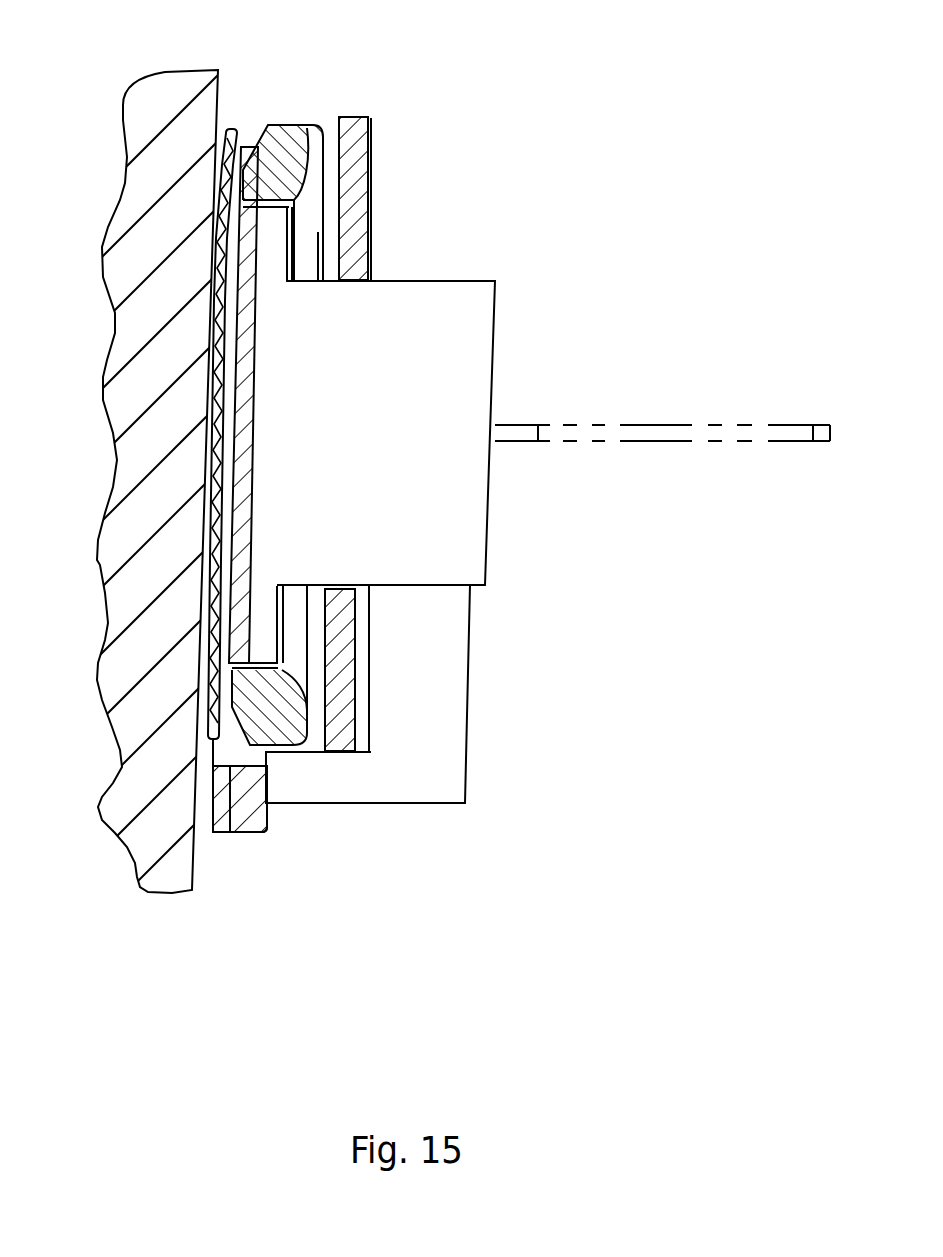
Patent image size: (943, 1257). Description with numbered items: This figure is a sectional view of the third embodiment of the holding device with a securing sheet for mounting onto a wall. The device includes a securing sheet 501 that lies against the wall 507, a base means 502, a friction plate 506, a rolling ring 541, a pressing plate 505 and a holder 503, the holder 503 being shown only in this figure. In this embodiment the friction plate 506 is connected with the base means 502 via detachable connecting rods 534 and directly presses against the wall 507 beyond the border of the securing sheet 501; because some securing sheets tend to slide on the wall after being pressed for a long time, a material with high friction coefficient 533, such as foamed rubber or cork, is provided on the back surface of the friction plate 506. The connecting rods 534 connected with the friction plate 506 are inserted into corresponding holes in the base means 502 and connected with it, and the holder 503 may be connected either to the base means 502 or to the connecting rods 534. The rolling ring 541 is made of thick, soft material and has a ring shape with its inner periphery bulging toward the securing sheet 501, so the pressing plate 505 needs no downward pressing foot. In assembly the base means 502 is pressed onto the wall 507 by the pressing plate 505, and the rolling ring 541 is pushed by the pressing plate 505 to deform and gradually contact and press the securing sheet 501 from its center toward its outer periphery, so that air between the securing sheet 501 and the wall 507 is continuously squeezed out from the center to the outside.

The securing sheet 501 is at (233, 128).
The base means 502 is at (508, 325).
The holder 503 is at (643, 425).
The pressing plate 505 is at (352, 115).
The friction plate 506 is at (260, 822).
The wall 507 is at (138, 830).
The material with high friction coefficient 533 is at (218, 833).
The connecting rods 534 is at (448, 698).
The rolling ring 541 is at (288, 128).